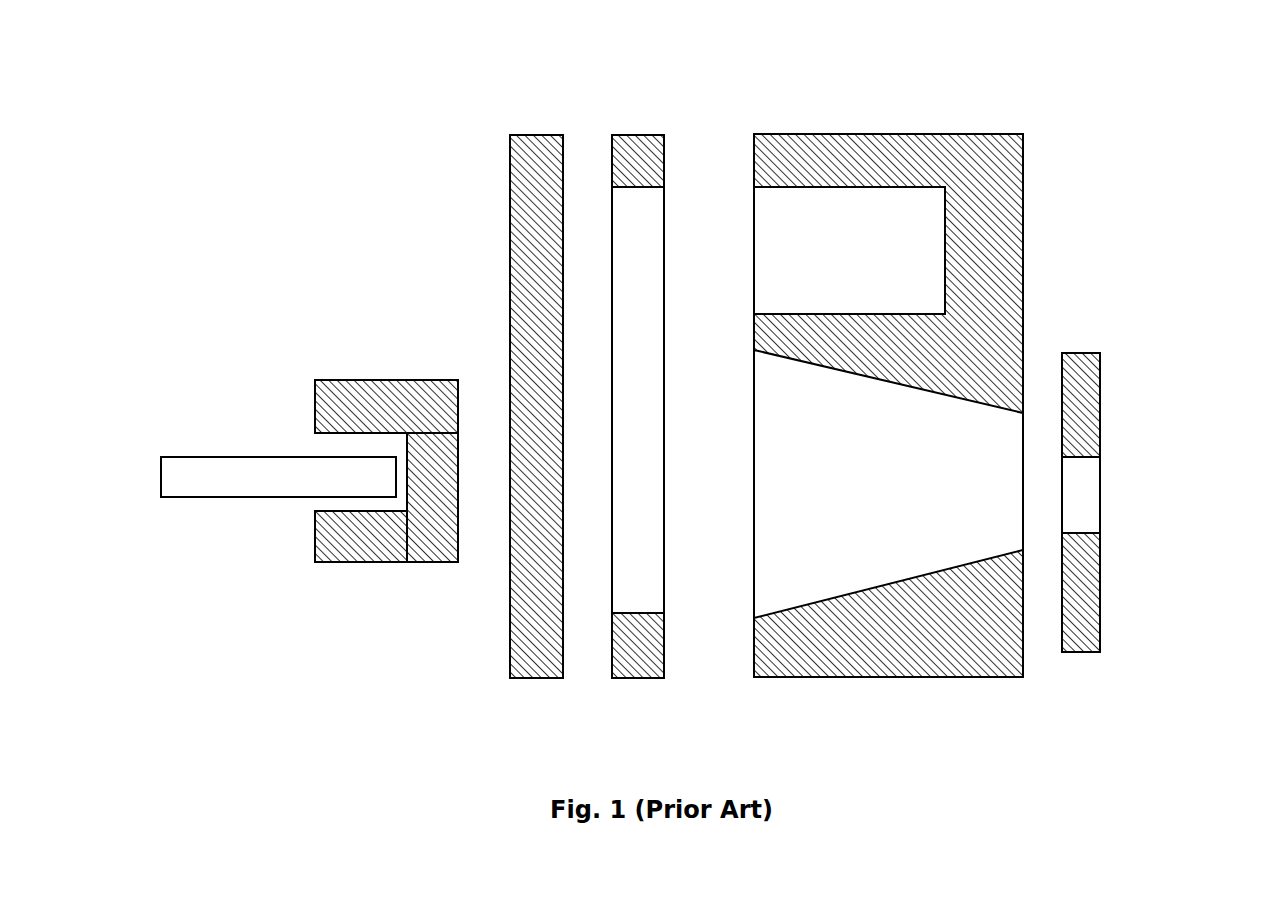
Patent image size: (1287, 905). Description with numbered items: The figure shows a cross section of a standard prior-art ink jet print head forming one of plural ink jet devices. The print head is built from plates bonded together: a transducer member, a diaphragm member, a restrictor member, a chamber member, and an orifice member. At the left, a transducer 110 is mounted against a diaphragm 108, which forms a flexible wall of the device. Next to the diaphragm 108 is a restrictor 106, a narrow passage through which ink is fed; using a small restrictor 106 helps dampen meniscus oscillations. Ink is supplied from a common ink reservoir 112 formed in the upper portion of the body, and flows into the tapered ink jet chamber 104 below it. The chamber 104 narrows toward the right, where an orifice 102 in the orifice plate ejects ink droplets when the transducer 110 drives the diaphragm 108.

The orifice 102 is at (1087, 495).
The ink jet chamber 104 is at (867, 508).
The restrictor 106 is at (647, 138).
The diaphragm 108 is at (533, 678).
The transducer 110 is at (238, 457).
The common ink reservoir 112 is at (893, 237).